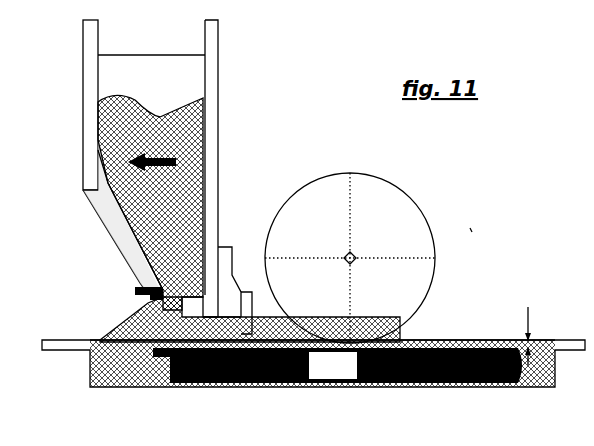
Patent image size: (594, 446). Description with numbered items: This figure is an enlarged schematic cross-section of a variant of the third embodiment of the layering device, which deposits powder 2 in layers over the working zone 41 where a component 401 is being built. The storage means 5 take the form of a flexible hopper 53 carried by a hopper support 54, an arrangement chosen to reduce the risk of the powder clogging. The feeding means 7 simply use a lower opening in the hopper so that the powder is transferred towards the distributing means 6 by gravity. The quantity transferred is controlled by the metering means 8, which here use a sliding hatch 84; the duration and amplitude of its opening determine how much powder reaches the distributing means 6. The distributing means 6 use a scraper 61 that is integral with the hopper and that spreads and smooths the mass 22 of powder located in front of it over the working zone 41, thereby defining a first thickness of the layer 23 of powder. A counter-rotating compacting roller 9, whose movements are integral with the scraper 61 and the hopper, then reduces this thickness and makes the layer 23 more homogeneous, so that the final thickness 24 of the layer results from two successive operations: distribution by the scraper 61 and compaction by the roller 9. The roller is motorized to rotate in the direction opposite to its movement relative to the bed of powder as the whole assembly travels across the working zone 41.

The powder 2 is at (150, 202).
The storage means 5 is at (257, 86).
The distributing means 6 is at (250, 258).
The feeding means 7 is at (92, 224).
The metering means 8 is at (100, 294).
The compacting roller 9 is at (405, 222).
The mass of powder 22 is at (161, 332).
The layer of powder 23 is at (448, 343).
The final thickness 24 is at (541, 336).
The working zone 41 is at (470, 228).
The flexible hopper 53 is at (108, 183).
The hopper support 54 is at (90, 88).
The scraper 61 is at (250, 312).
The sliding hatch 84 is at (137, 291).
The component 401 is at (337, 365).